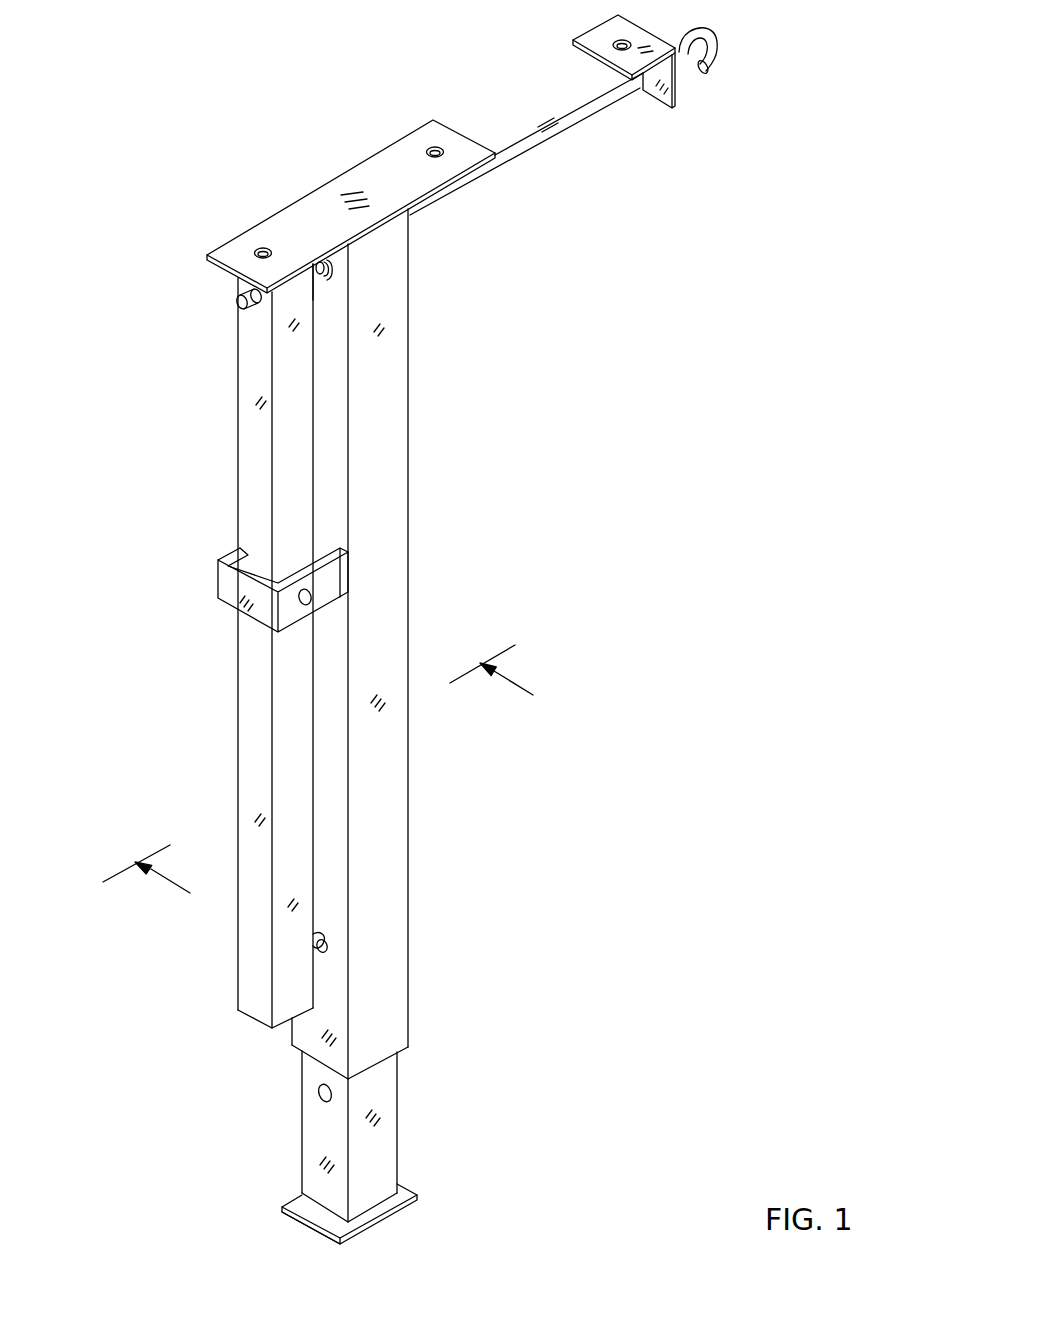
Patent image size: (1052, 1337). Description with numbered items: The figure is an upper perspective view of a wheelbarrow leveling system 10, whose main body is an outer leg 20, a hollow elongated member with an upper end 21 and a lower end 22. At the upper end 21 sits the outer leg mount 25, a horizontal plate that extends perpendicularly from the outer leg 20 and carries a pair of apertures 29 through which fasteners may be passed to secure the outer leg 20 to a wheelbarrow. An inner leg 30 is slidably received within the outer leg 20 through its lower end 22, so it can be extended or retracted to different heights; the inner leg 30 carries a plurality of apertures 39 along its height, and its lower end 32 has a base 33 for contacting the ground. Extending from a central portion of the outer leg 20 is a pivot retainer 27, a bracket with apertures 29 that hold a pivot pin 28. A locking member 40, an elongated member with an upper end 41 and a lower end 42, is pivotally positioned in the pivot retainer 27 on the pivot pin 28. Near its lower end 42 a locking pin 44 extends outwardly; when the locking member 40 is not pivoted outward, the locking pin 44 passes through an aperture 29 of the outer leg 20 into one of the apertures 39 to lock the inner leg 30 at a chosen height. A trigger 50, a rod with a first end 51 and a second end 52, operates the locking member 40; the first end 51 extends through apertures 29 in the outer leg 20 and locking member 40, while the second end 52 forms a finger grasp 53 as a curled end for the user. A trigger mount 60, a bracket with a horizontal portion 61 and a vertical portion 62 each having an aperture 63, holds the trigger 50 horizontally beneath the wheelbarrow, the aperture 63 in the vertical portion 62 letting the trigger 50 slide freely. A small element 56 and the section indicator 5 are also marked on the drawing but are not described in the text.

The wheelbarrow leveling system 10 is at (120, 80).
The outer leg 20 is at (385, 446).
The upper end 21 is at (380, 236).
The lower end 22 is at (377, 1044).
The outer leg mount 25 is at (302, 212).
The pivot retainer 27 is at (218, 568).
The pivot pin 28 is at (312, 595).
The apertures 29 is at (430, 148).
The inner leg 30 is at (378, 1146).
The lower end 32 is at (375, 1200).
The base 33 is at (297, 1220).
The apertures 39 is at (318, 1095).
The locking member 40 is at (238, 750).
The upper end 41 is at (237, 285).
The lower end 42 is at (253, 1022).
The locking pin 44 is at (318, 934).
The trigger 50 is at (533, 150).
The first end 51 is at (238, 308).
The second end 52 is at (713, 45).
The finger grasp 53 is at (708, 73).
The pin 56 is at (322, 272).
The trigger mount 60 is at (642, 131).
The horizontal portion 61 is at (582, 48).
The vertical portion 62 is at (674, 98).
The apertures 63 is at (614, 40).
The section line 5 is at (331, 782).